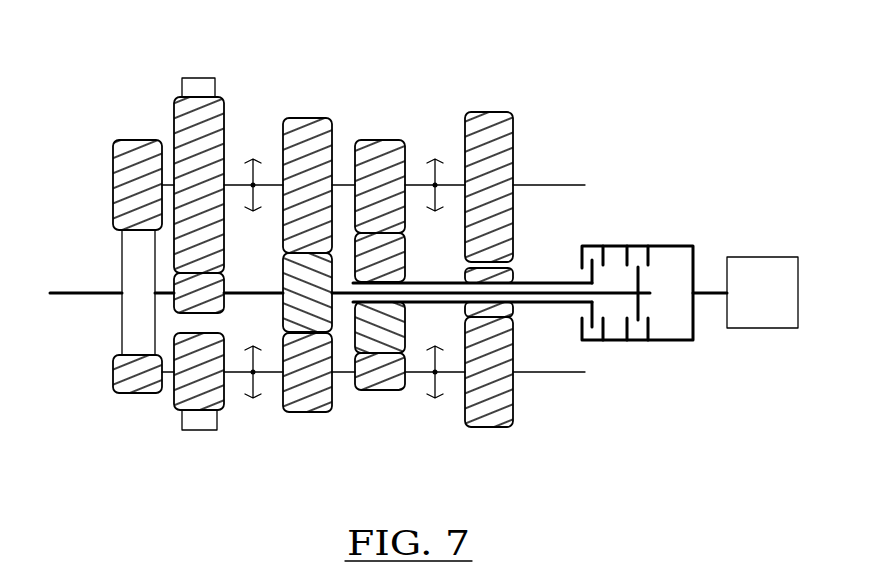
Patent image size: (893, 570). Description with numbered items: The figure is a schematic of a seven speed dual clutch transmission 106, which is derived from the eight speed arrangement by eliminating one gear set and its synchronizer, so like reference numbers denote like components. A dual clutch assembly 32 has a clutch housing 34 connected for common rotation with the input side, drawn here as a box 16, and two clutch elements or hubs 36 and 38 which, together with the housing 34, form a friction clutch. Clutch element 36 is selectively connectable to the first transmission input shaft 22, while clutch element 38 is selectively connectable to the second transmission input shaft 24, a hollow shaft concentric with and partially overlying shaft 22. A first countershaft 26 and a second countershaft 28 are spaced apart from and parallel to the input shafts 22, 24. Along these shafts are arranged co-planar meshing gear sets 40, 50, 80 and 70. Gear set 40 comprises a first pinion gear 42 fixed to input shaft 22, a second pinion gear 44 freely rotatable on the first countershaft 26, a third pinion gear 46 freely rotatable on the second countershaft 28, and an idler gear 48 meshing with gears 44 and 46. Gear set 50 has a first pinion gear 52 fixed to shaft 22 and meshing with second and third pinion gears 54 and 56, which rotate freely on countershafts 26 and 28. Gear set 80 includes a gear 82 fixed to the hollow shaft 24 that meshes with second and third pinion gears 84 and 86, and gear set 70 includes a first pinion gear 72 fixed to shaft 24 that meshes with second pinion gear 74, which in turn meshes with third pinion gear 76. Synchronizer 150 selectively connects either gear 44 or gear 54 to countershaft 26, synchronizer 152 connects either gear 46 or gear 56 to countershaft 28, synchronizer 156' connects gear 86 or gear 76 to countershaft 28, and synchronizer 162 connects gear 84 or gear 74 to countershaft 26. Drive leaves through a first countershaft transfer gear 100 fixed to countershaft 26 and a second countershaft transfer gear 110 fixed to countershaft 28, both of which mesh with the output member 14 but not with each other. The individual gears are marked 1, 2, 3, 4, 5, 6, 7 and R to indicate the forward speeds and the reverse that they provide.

The first gear 1 is at (189, 196).
The second gear 2 is at (492, 437).
The third gear 3 is at (198, 432).
The fourth gear 4 is at (371, 211).
The fifth gear 5 is at (298, 196).
The sixth gear 6 is at (371, 385).
The seventh gear 7 is at (297, 418).
The reverse gear R is at (479, 195).
The output member 14 is at (137, 266).
The output / differential 16 is at (748, 304).
The first transmission input shaft 22 is at (247, 290).
The second transmission input shaft 24 is at (548, 282).
The first countershaft 26 is at (552, 373).
The second countershaft 28 is at (559, 185).
The dual clutch assembly 32 is at (654, 283).
The clutch housing 34 is at (618, 246).
The first clutch element 36 is at (648, 327).
The second clutch element 38 is at (603, 327).
The co-planar gear set 40 is at (199, 263).
The first pinion gear 42 is at (184, 305).
The second pinion gear 44 is at (199, 381).
The third pinion gear 46 is at (199, 141).
The idler gear 48 is at (198, 78).
The co-planar gear set 50 is at (304, 318).
The first pinion gear 52 is at (293, 287).
The second pinion gear 54 is at (307, 372).
The third pinion gear 56 is at (307, 185).
The co-planar gear set 70 is at (491, 314).
The first pinion gear 72 is at (462, 276).
The second pinion gear 74 is at (489, 372).
The third pinion gear 76 is at (489, 187).
The co-planar gear set 80 is at (376, 262).
The first pinion gear 82 is at (366, 270).
The second pinion gear 84 is at (378, 392).
The third pinion gear 86 is at (380, 186).
The first countershaft transfer gear 100 is at (120, 387).
The seven speed dual clutch transmission 106 is at (680, 108).
The second countershaft transfer gear 110 is at (120, 197).
The synchronizer 150 is at (254, 397).
The synchronizer 152 is at (254, 160).
The synchronizer 156' is at (420, 146).
The synchronizer 162 is at (436, 397).